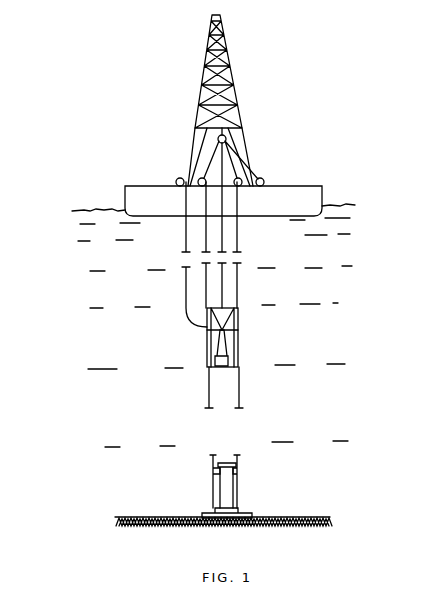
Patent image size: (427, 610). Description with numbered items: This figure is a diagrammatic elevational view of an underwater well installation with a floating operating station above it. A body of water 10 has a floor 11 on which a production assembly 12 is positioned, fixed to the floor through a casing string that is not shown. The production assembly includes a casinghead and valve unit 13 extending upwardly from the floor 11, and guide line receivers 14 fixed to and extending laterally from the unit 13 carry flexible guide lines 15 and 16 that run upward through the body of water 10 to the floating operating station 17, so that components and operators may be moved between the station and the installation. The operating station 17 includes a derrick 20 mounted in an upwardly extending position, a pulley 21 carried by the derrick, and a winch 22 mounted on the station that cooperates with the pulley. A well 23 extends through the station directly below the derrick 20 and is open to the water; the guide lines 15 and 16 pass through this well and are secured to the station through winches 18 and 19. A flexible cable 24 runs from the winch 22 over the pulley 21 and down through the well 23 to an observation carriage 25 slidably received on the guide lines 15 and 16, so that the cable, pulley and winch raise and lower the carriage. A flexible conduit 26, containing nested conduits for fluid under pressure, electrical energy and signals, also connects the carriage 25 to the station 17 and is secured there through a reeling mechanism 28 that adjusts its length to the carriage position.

The body of water 10 is at (319, 260).
The floor 11 is at (293, 516).
The production assembly 12 is at (203, 486).
The casinghead and valve unit 13 is at (233, 490).
The guide line receivers 14 is at (235, 504).
The guide line 15 is at (208, 386).
The guide line 16 is at (240, 386).
The floating operating station 17 is at (264, 151).
The winch 18 is at (207, 172).
The winch 19 is at (236, 178).
The derrick 20 is at (236, 48).
The pulley 21 is at (226, 137).
The winch 22 is at (265, 178).
The well 23 is at (208, 214).
The flexible cable 24 is at (225, 234).
The observation carriage 25 is at (249, 334).
The flexible conduit 26 is at (185, 286).
The reeling mechanism 28 is at (178, 178).